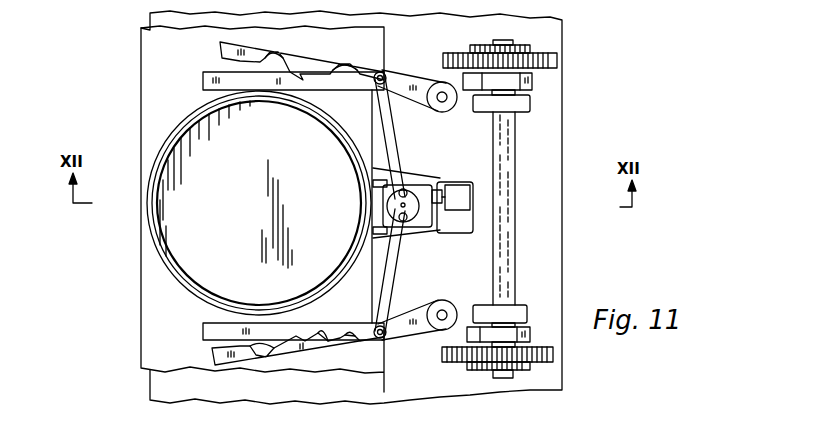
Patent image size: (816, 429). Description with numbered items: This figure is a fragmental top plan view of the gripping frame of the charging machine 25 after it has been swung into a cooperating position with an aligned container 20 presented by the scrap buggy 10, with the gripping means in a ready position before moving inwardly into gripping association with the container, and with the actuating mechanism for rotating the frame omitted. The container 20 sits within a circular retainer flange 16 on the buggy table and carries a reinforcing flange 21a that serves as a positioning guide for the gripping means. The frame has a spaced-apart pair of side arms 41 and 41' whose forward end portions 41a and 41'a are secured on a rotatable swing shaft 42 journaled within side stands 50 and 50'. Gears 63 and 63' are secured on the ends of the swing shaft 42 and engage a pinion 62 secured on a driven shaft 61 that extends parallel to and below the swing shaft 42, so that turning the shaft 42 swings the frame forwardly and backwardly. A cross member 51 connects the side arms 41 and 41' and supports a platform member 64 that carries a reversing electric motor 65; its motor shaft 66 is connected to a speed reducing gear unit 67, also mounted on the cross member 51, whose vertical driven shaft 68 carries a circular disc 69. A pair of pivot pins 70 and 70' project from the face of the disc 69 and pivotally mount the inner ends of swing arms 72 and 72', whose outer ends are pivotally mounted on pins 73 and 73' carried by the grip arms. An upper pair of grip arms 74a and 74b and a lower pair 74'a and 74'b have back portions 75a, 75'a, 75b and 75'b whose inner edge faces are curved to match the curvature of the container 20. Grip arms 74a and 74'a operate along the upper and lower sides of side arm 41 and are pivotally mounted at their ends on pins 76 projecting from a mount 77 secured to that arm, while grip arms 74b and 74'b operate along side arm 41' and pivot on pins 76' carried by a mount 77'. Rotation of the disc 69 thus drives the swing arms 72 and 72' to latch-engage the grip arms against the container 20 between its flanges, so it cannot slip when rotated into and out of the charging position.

The scrap buggy 10 is at (141, 70).
The charging machine 25 is at (567, 30).
The circular retainer flange 16 is at (158, 243).
The container 20 is at (180, 264).
The flange 21a is at (163, 167).
The side arm 41' is at (272, 79).
The side arm 41 is at (272, 337).
The forward end portion 41'a is at (547, 86).
The forward end portion 41a is at (532, 338).
The curved back portion 75b is at (243, 62).
The curved back portion 75'b is at (286, 46).
The grip arm 74'b is at (344, 51).
The curved back portion 75a is at (230, 343).
The curved back portion 75'a is at (275, 386).
The grip arm 74'a is at (314, 353).
The grip arm 74a is at (360, 340).
The grip arm 74b is at (372, 72).
The pin 73' is at (399, 67).
The pin 73 is at (410, 338).
The swing arm 72' is at (400, 138).
The swing arm 72 is at (400, 271).
The mount 77' is at (449, 116).
The pin 76' is at (461, 111).
The mount 77 is at (448, 295).
The pin 76 is at (456, 303).
The gear 63' is at (530, 56).
The gear 63 is at (521, 363).
The pinion 62 is at (530, 368).
The driven shaft 61 is at (503, 378).
The side stand 50' is at (545, 108).
The side stand 50 is at (511, 296).
The swing shaft 42 is at (515, 160).
The cross member 51 is at (372, 300).
The circular disc 69 is at (410, 183).
The gear reduction unit 67 is at (402, 228).
The driven shaft 68 is at (403, 205).
The pivot pin 70' is at (362, 186).
The pivot pin 70 is at (362, 225).
The motor shaft 66 is at (438, 189).
The reversing electric motor 65 is at (460, 185).
The platform member 64 is at (463, 230).